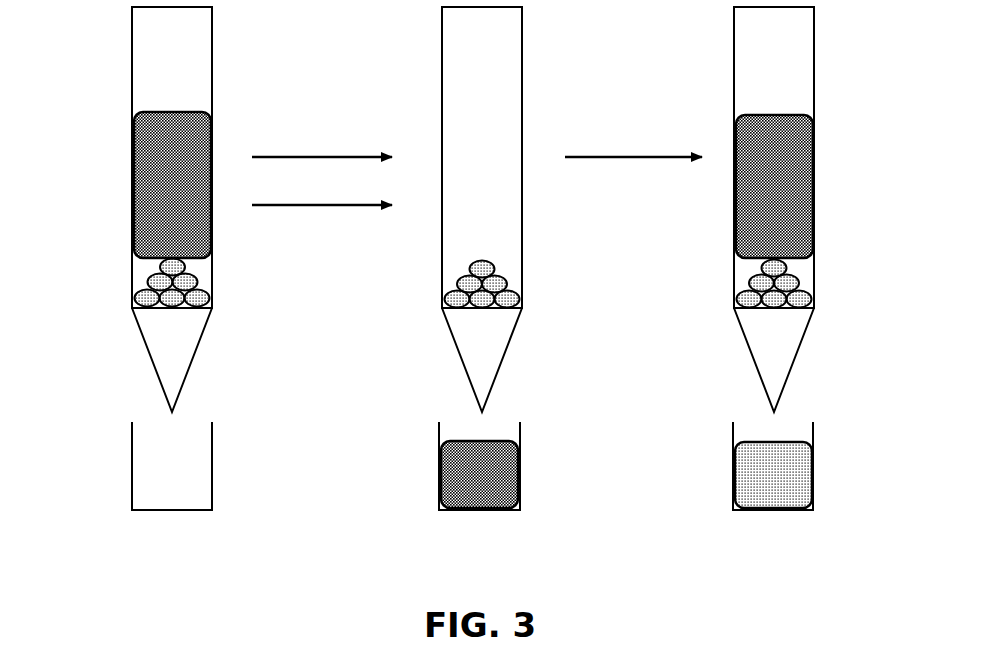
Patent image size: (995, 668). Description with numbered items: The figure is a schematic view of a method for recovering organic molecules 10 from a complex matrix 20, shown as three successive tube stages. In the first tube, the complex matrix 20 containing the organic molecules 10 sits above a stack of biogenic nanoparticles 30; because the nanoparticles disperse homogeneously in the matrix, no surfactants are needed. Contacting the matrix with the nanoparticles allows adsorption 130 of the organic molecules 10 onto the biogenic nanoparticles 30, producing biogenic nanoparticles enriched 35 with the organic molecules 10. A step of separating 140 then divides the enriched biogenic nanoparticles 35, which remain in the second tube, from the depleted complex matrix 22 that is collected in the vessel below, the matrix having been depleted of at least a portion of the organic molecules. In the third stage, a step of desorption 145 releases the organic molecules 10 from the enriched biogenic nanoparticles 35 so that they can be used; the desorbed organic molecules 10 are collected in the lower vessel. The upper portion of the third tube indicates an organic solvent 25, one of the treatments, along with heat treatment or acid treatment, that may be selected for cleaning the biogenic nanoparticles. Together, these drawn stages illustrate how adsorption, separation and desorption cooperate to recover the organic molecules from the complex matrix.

The organic molecules 10 is at (140, 200).
The complex matrix 20 is at (143, 130).
The depleted complex matrix 22 is at (445, 480).
The organic solvent 25 is at (797, 162).
The biogenic nanoparticles 30 is at (137, 293).
The enriched biogenic nanoparticles 35 is at (447, 293).
The adsorption 130 is at (322, 137).
The separating 140 is at (322, 185).
The desorption 145 is at (633, 137).